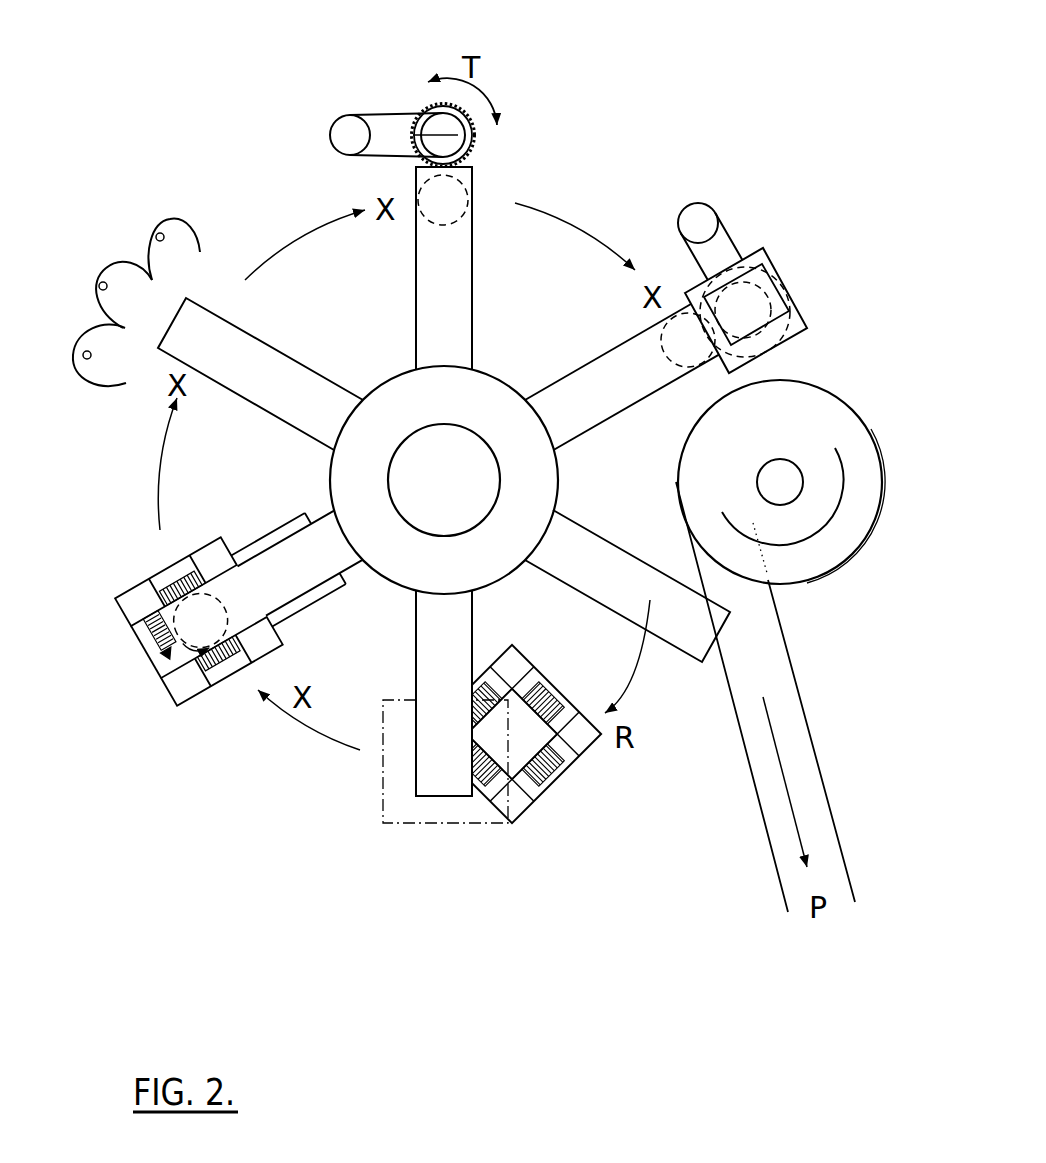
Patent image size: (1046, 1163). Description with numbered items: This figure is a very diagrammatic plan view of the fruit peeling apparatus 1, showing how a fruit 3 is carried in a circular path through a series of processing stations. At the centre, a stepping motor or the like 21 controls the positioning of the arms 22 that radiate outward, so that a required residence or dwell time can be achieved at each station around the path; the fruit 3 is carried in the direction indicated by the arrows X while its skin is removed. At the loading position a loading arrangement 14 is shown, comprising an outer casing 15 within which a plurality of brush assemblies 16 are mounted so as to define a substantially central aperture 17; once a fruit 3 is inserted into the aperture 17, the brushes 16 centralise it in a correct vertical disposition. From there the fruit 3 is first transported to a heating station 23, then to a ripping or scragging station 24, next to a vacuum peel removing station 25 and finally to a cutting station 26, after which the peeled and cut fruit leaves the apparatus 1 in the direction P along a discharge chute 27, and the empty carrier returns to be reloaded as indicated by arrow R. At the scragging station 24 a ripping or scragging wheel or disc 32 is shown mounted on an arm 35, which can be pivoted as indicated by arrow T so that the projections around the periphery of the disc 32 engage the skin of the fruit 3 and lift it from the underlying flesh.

The apparatus 1 is at (250, 768).
The fruit 3 is at (160, 663).
The loading arrangement 14 is at (587, 752).
The outer casing 15 is at (550, 681).
The brush assemblies 16 is at (505, 738).
The central aperture 17 is at (535, 782).
The stepping motor 21 is at (444, 480).
The arms 22 is at (302, 388).
The heating station 23 is at (92, 292).
The ripping or scragging station 24 is at (486, 162).
The vacuum peel removing station 25 is at (800, 282).
The cutting station 26 is at (800, 590).
The discharge chute 27 is at (812, 788).
The ripping or scragging wheels or discs 32 is at (425, 104).
The arms 35 is at (393, 127).